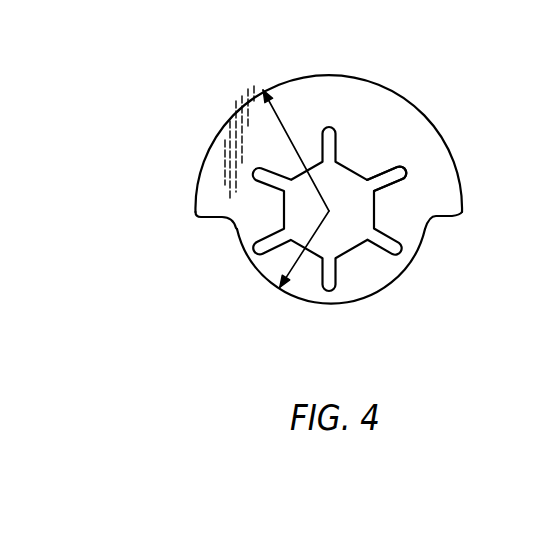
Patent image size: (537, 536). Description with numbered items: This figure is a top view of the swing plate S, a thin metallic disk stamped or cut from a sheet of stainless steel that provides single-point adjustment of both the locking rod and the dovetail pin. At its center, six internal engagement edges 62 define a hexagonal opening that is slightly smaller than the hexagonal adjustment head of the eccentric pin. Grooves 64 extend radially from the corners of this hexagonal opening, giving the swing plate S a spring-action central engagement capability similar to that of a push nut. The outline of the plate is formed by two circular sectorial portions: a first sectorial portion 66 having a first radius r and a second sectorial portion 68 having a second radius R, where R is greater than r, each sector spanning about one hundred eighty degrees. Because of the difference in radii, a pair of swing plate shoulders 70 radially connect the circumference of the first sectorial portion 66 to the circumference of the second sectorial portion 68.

The internal engagement edges 62 is at (265, 212).
The grooves 64 is at (407, 173).
The first sectorial portion 66 is at (386, 268).
The second sectorial portion 68 is at (378, 91).
The swing plate shoulders 70 is at (202, 219).
The second radius R is at (283, 110).
The first radius r is at (336, 259).
The swing plate S is at (339, 58).